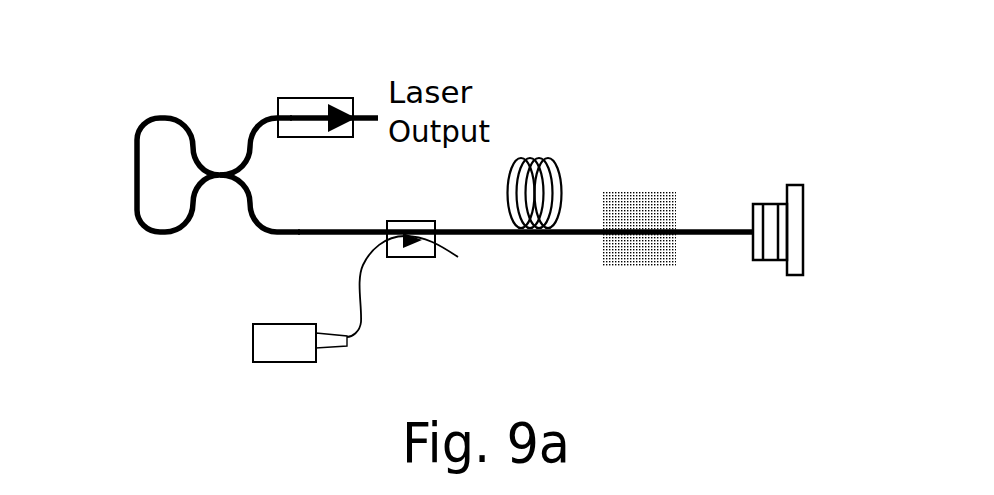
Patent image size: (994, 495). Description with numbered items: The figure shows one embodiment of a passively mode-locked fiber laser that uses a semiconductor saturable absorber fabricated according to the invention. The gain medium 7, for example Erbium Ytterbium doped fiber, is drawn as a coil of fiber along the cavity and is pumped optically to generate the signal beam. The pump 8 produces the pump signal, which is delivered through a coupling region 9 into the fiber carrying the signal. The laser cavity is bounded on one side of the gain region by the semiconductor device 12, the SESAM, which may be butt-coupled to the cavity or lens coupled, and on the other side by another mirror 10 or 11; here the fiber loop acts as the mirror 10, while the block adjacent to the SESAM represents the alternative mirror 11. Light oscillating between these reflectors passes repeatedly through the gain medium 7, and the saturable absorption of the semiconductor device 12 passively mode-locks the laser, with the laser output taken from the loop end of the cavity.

The gain medium 7 is at (548, 158).
The pump 8 is at (285, 354).
The coupling region 9 is at (418, 251).
The mirror 10 is at (137, 160).
The mirror 11 is at (637, 193).
The semiconductor device 12 is at (785, 185).